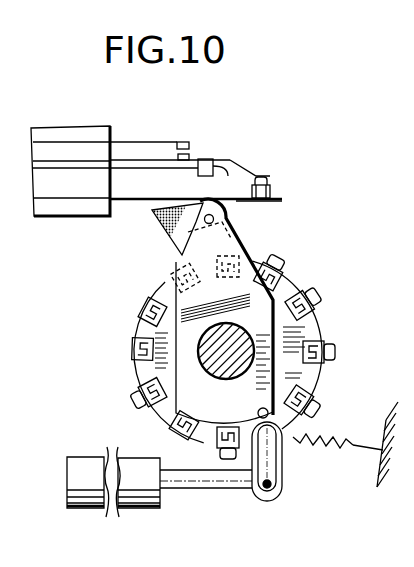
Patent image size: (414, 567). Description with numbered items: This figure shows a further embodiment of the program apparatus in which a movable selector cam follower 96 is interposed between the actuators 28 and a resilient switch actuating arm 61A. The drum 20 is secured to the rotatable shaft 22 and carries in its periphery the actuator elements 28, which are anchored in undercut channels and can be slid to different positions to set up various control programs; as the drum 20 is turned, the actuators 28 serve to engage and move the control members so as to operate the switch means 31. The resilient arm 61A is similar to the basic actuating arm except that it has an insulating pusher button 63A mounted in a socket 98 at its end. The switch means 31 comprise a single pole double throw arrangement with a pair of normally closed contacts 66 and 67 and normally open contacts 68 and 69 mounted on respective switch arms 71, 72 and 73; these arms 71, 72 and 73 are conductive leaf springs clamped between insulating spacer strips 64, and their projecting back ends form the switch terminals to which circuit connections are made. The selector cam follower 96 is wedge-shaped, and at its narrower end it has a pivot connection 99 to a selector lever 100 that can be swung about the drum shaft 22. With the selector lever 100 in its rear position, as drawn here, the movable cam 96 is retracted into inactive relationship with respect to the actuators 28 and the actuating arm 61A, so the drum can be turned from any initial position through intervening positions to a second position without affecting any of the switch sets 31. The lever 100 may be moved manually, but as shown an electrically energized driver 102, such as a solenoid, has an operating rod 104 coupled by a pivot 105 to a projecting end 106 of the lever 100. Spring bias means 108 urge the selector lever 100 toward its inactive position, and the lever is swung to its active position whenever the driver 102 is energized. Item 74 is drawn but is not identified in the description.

The switch means 31 is at (243, 122).
The insulating spacer strips 64 is at (60, 205).
The switch arm 73 is at (125, 142).
The normally open contact 69 is at (195, 132).
The normally open contact 68 is at (188, 158).
The switch arm 71 is at (137, 169).
The normally closed contact 66 is at (198, 172).
The normally closed contact 67 is at (222, 172).
The switch arm 72 is at (234, 160).
The tappet cap 74 is at (266, 178).
The insulating pusher button 63A is at (268, 183).
The socket 98 is at (282, 199).
The resilient arm 61A is at (247, 201).
The selector cam follower 96 is at (168, 227).
The pivot connection 99 is at (216, 221).
The selector lever 100 is at (168, 265).
The drum 20 is at (308, 331).
The actuator elements 28 is at (322, 297).
The rotatable shaft 22 is at (214, 367).
The pivot 105 is at (275, 501).
The projecting end 106 is at (268, 505).
The operating rod 104 is at (184, 482).
The electrically energized driver 102 is at (132, 498).
The spring bias means 108 is at (305, 433).